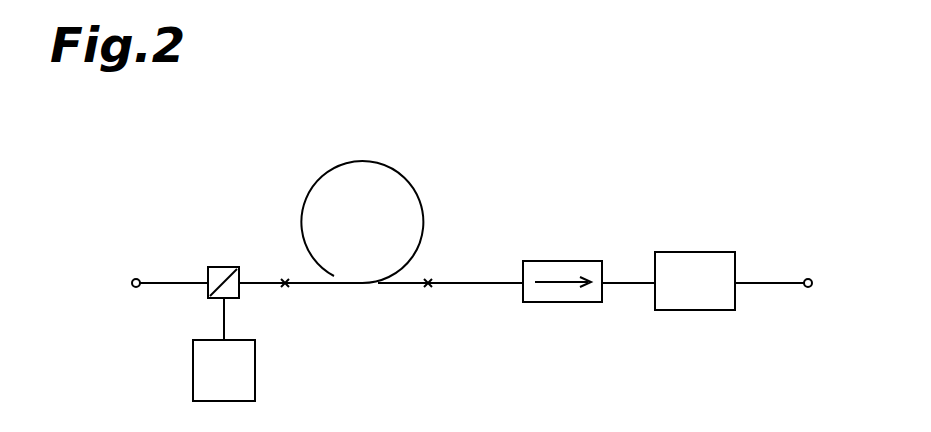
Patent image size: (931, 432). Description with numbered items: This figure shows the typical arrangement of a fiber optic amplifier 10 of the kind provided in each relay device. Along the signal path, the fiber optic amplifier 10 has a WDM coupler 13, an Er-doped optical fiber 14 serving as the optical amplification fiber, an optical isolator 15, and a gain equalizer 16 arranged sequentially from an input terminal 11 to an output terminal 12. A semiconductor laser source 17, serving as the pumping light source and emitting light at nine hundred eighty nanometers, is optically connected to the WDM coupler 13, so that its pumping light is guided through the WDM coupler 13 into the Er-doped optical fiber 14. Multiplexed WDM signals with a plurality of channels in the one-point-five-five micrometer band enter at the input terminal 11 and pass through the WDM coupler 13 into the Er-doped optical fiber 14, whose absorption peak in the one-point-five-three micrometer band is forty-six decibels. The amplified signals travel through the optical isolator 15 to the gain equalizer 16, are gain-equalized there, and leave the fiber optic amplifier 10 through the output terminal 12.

The fiber optic amplifier 10 is at (505, 150).
The input terminal 11 is at (136, 278).
The output terminal 12 is at (808, 278).
The WDM coupler 13 is at (224, 266).
The Er-doped optical fiber 14 is at (400, 162).
The optical isolator 15 is at (560, 260).
The gain equalizer 16 is at (700, 251).
The semiconductor laser source 17 is at (255, 378).